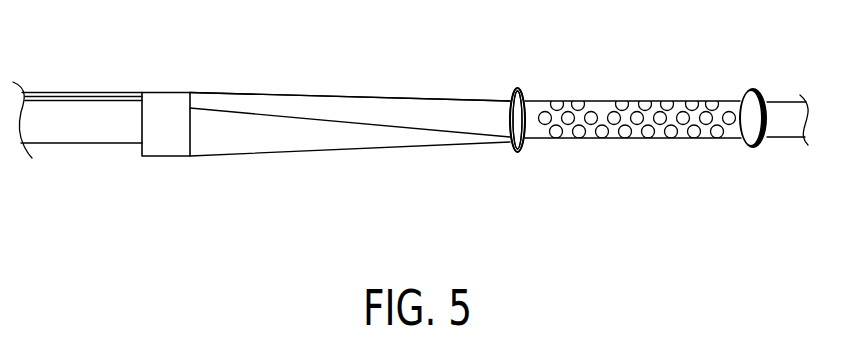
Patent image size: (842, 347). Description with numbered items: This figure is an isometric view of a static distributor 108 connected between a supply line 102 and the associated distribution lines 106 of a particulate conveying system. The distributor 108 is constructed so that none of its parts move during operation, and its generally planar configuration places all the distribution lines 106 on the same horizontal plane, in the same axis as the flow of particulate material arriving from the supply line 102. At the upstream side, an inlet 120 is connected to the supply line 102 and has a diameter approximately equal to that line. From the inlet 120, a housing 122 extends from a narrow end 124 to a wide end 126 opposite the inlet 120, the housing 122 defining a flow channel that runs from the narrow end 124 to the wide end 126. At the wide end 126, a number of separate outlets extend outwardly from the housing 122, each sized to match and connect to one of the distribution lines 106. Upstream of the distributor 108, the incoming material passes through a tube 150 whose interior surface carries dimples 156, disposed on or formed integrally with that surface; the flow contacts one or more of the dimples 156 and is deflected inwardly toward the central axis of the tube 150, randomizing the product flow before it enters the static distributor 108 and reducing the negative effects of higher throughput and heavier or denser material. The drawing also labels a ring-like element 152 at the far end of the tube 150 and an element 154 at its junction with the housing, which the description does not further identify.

The supply line 102 is at (782, 107).
The distribution lines 106 is at (80, 118).
The static distributor 108 is at (278, 106).
The inlet 120 is at (512, 99).
The housing 122 is at (365, 108).
The narrow end 124 is at (508, 110).
The wide end 126 is at (192, 99).
The tube 150 is at (660, 100).
The distal ring 152 is at (746, 97).
The proximal end face 154 is at (524, 100).
The dimples 156 is at (615, 116).